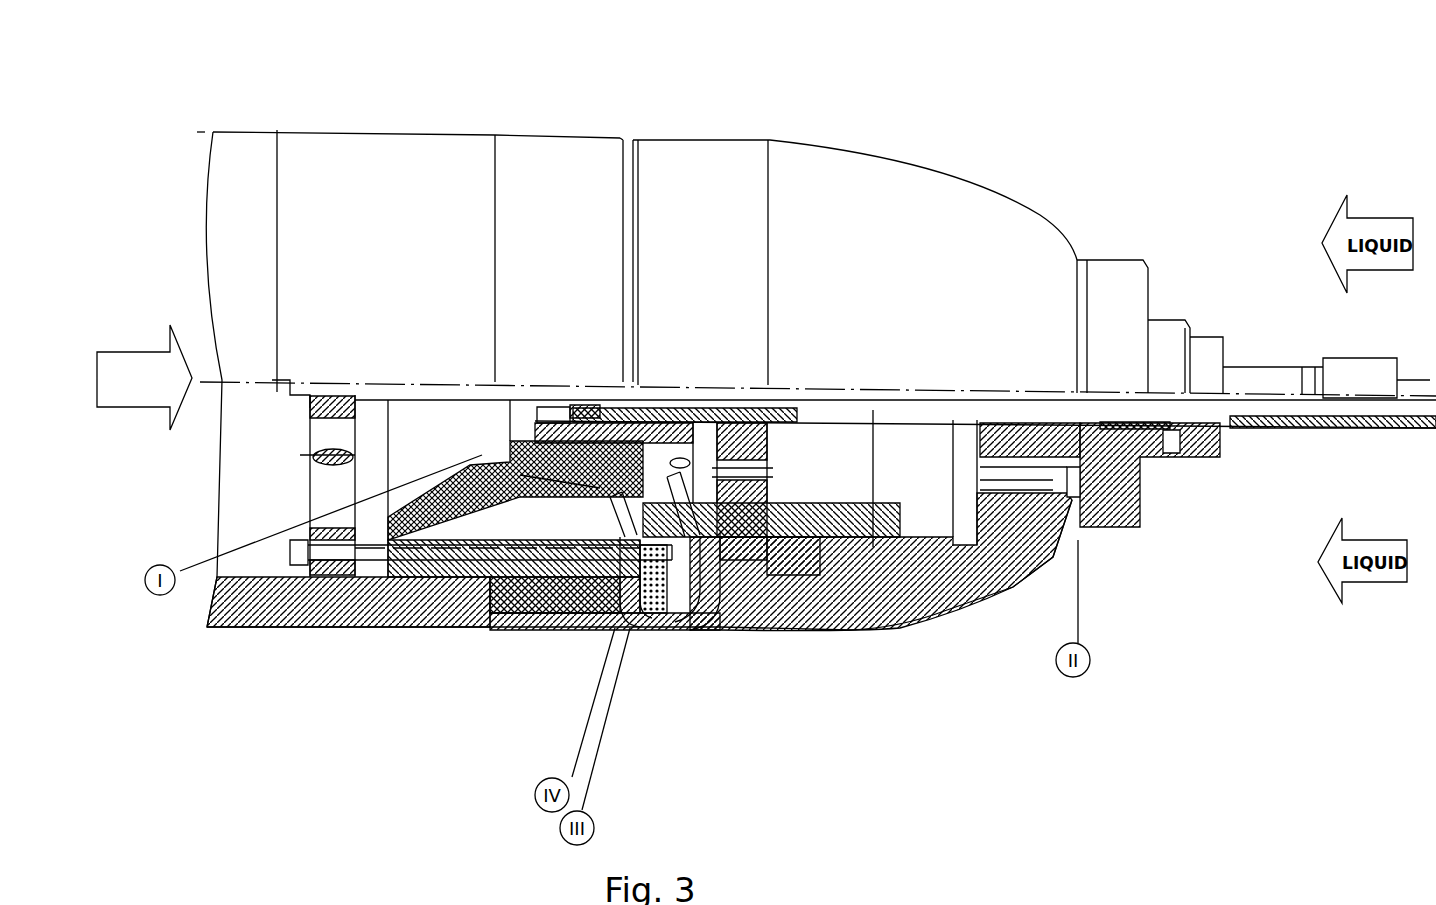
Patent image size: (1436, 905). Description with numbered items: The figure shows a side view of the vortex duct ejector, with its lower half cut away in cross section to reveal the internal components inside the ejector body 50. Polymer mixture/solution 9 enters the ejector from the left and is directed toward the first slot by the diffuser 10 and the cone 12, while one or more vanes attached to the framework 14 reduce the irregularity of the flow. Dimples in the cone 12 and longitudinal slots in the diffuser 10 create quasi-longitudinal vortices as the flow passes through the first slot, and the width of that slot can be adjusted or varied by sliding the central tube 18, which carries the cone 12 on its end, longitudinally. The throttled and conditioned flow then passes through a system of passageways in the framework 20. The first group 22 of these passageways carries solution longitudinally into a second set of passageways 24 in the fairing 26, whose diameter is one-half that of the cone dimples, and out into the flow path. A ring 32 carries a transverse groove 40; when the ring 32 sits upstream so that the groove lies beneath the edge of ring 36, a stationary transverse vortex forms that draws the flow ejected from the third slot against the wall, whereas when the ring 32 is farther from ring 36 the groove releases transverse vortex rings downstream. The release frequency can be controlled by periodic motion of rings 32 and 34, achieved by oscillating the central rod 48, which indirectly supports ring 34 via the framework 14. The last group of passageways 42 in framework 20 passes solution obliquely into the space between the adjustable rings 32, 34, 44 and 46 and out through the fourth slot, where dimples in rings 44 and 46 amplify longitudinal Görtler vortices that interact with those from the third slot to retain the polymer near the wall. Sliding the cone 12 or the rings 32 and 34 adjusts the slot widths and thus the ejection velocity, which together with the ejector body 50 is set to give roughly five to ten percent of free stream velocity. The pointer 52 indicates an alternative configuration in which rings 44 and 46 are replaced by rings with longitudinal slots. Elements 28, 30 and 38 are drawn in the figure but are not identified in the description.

The polymer mixture/solution 9 is at (144, 377).
The diffuser 10 is at (373, 628).
The cone 12 is at (443, 628).
The framework 14 is at (303, 628).
The central tube 18 is at (1257, 423).
The framework 20 is at (803, 633).
The first group of passageways 22 is at (848, 630).
The second set of passageways 24 is at (1027, 587).
The fairing 26 is at (1072, 527).
The cover 28 is at (1120, 500).
The ring 30 is at (767, 633).
The ring 32 is at (647, 628).
The ring 34 is at (668, 628).
The ring 36 is at (732, 635).
The ring 38 is at (755, 633).
The transverse groove 40 is at (633, 137).
The last group of passageways 42 is at (605, 628).
The ring 44 is at (550, 628).
The ring 46 is at (508, 628).
The central rod 48 is at (1300, 410).
The ejector body 50 is at (220, 628).
The pointer 52 is at (587, 628).